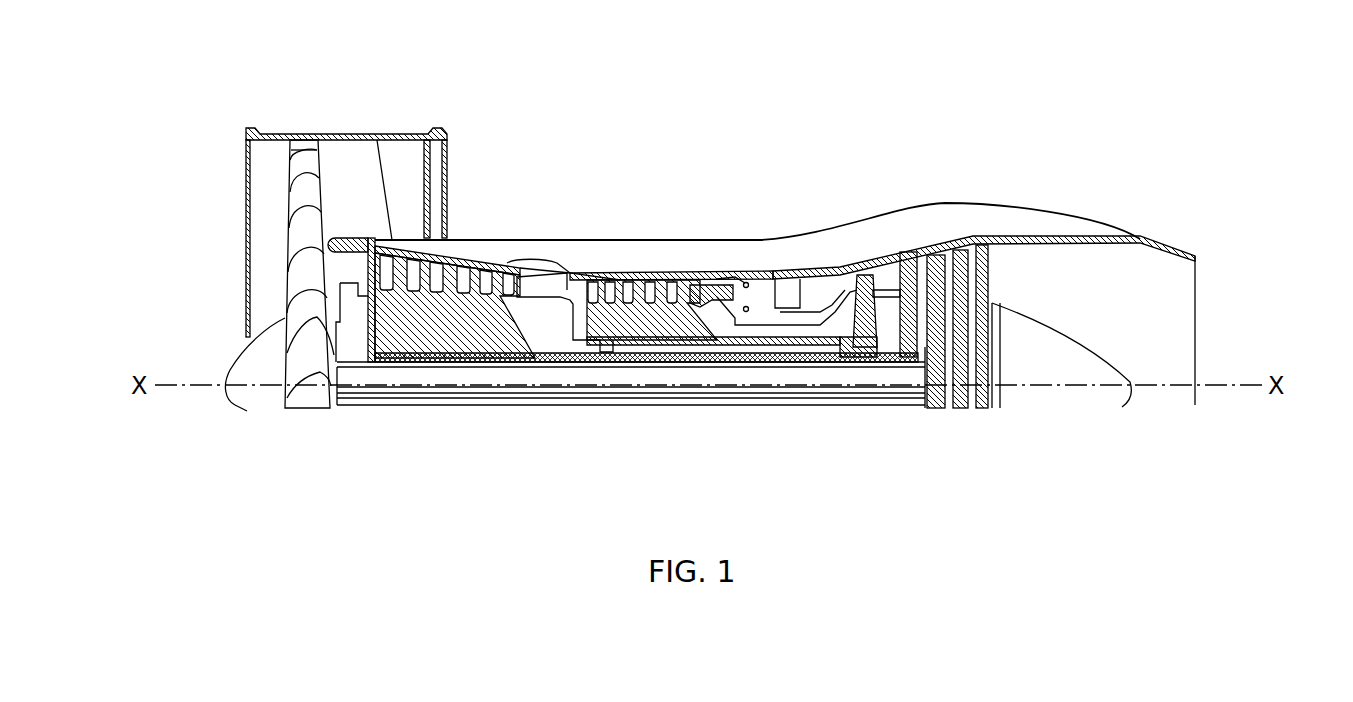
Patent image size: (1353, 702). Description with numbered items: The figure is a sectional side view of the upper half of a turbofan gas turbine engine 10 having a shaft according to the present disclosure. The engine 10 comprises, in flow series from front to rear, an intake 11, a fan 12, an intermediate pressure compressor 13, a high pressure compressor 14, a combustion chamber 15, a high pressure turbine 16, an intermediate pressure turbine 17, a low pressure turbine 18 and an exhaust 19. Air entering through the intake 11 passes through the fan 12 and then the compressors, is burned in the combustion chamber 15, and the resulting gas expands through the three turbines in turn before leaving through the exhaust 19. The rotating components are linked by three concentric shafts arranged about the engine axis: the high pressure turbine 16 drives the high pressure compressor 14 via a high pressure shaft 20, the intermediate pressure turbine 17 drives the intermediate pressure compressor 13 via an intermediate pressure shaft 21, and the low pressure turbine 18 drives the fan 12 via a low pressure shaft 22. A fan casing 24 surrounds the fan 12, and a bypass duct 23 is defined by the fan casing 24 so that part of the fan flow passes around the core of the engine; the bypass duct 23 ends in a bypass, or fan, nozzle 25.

The turbofan gas turbine engine 10 is at (618, 156).
The intake 11 is at (220, 250).
The fan 12 is at (303, 140).
The intermediate pressure compressor 13 is at (450, 262).
The high pressure compressor 14 is at (640, 262).
The combustion chamber 15 is at (790, 255).
The high pressure turbine 16 is at (865, 275).
The intermediate pressure turbine 17 is at (908, 253).
The low pressure turbine 18 is at (962, 250).
The exhaust 19 is at (1183, 333).
The high pressure shaft 20 is at (750, 355).
The intermediate pressure shaft 21 is at (777, 357).
The low pressure shaft 22 is at (677, 378).
The bypass duct 23 is at (365, 157).
The fan casing 24 is at (337, 140).
The bypass nozzle 25 is at (445, 160).